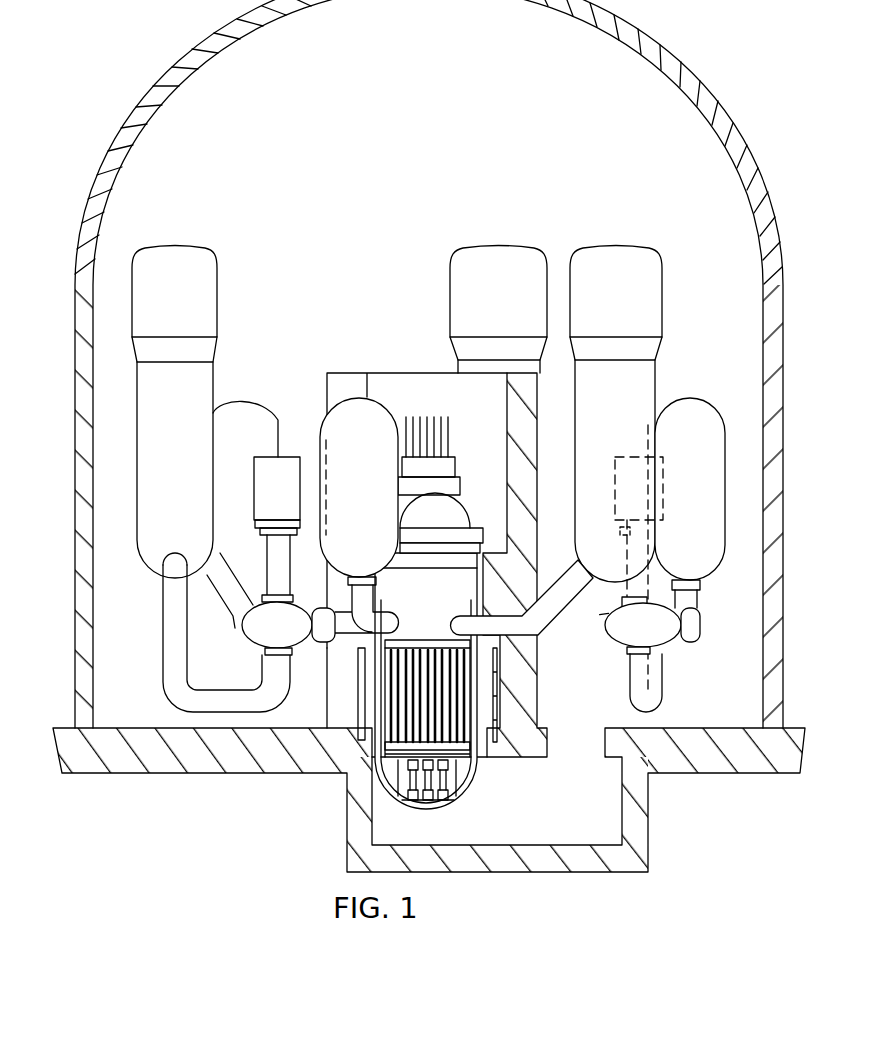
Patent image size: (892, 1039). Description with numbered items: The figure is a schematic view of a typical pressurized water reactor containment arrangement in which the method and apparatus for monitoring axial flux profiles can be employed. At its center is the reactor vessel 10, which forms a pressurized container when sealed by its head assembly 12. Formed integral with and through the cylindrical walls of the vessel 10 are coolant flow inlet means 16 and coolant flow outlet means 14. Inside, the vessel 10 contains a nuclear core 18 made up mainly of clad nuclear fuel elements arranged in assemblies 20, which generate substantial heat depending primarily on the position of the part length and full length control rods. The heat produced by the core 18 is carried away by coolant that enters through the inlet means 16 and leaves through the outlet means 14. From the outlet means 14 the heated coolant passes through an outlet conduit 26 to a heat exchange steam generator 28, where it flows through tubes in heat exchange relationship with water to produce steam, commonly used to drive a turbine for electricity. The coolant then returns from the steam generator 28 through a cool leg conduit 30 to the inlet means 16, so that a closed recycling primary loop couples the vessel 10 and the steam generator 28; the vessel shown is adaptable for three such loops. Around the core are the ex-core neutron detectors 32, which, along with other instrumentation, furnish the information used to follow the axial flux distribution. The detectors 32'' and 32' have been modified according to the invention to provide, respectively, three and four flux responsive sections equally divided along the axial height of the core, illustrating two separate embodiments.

The vessel 10 is at (434, 598).
The head assembly 12 is at (463, 527).
The coolant flow outlet means 14 is at (465, 613).
The coolant flow inlet means 16 is at (630, 559).
The nuclear core 18 is at (415, 712).
The fuel assemblies 20 is at (470, 750).
The outlet conduit 26 is at (226, 583).
The steam generator 28 is at (185, 297).
The cool leg conduit 30 is at (333, 641).
The ex-core neutron detectors 32 is at (438, 695).
The ex-core detector 32' is at (526, 565).
The ex-core detector 32'' is at (332, 688).